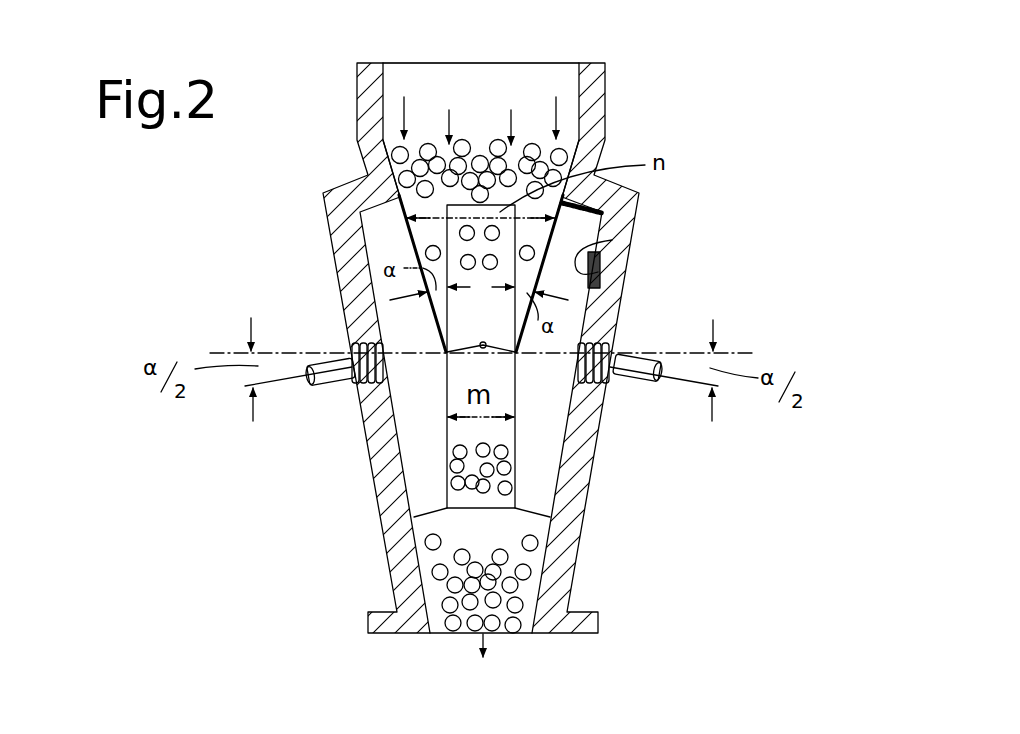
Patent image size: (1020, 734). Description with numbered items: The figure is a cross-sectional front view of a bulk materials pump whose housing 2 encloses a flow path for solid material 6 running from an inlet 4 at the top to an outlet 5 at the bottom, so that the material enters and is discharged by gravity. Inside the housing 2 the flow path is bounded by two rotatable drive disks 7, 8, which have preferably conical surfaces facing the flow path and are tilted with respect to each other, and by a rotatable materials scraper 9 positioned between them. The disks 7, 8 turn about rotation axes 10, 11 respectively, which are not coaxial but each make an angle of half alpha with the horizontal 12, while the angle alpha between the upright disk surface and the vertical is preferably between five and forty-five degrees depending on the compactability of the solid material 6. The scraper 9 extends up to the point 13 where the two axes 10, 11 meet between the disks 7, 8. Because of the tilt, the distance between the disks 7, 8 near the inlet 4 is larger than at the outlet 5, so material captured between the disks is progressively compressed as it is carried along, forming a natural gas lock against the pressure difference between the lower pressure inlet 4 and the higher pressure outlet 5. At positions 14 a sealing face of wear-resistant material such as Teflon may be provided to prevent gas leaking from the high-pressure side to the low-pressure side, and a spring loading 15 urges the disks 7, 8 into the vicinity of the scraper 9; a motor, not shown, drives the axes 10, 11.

The housing 2 is at (607, 120).
The inlet 4 is at (533, 82).
The outlet 5 is at (527, 627).
The solid material 6 is at (498, 147).
The drive disk 7 is at (410, 243).
The drive disk 8 is at (572, 255).
The rotatable materials scraper 9 is at (463, 374).
The rotation axis 10 is at (297, 384).
The rotation axis 11 is at (677, 385).
The horizontal 12 is at (742, 353).
The point 13 is at (483, 342).
The positions of sealing face 14 is at (568, 208).
The spring loading 15 is at (350, 342).